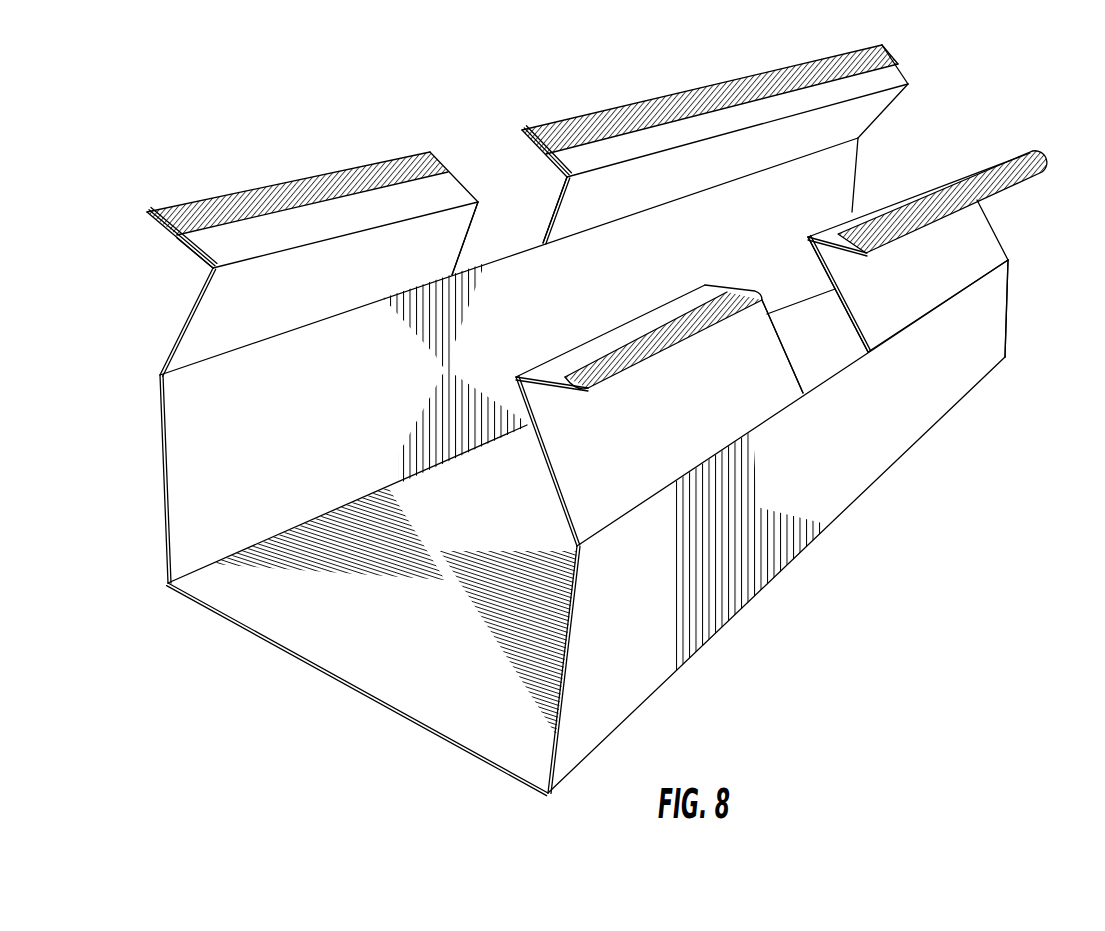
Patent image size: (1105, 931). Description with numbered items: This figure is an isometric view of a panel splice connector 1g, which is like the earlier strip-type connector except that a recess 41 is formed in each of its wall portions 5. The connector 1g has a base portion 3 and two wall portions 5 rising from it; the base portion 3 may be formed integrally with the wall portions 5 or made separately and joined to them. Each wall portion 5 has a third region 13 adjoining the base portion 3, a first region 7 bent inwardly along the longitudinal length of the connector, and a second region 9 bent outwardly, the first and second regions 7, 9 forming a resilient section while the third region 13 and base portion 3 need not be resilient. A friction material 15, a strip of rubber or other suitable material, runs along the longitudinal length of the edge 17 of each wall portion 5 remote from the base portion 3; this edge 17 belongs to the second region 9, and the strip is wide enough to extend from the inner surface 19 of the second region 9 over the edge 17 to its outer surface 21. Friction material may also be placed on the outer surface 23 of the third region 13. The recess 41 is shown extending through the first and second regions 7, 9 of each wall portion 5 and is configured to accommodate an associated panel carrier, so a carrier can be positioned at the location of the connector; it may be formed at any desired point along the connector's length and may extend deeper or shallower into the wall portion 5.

The connector 1g is at (509, 806).
The base portion 3 is at (388, 670).
The wall portion 5 is at (640, 665).
The first region 7 is at (217, 312).
The second region 9 is at (287, 227).
The third region 13 is at (198, 453).
The friction material 15 is at (572, 113).
The edge 17 is at (145, 222).
The inner surface 19 is at (890, 78).
The outer surface 21 is at (190, 257).
The outer surface 23 is at (970, 366).
The recess 41 is at (525, 217).